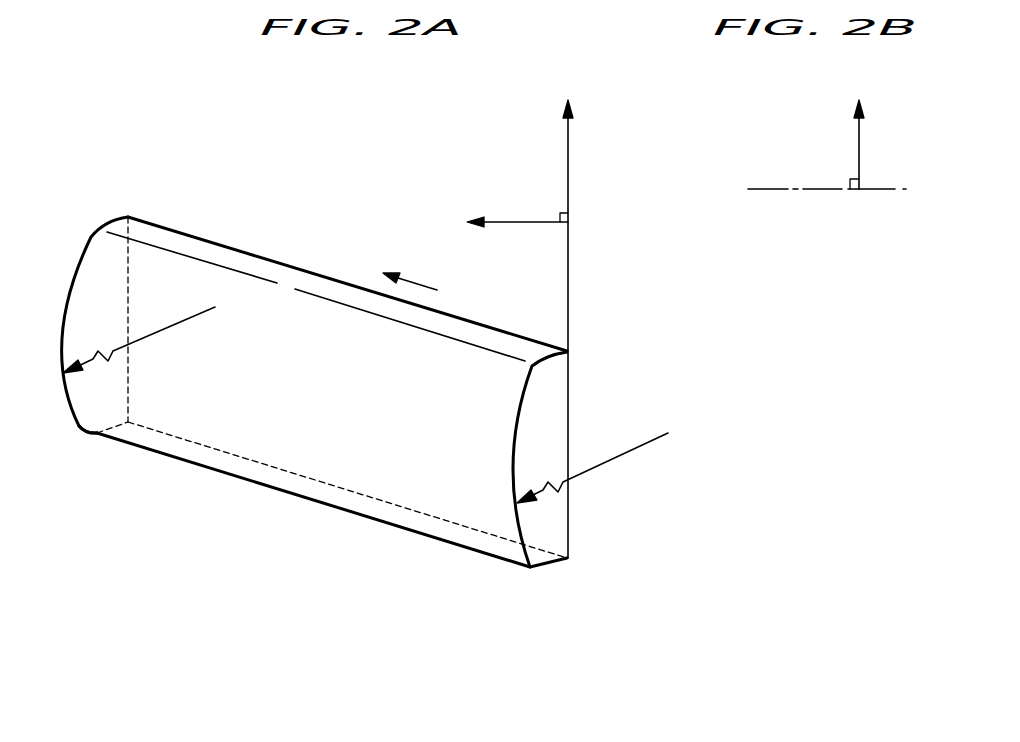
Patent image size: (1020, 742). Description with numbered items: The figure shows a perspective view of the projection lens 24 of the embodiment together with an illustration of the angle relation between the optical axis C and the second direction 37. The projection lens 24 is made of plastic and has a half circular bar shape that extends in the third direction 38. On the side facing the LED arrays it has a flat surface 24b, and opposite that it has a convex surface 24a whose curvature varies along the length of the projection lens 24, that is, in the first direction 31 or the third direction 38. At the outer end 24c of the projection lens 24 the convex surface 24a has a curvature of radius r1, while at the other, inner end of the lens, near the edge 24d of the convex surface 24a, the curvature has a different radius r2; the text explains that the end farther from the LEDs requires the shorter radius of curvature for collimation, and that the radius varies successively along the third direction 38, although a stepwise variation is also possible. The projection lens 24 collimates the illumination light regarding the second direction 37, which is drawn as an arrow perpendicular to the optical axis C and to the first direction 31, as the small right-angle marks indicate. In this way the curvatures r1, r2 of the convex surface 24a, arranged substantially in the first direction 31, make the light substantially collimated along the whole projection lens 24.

In FIG. 2A, the projection lens 24 is at (545, 342).
In FIG. 2A, the convex surface 24a is at (88, 260).
In FIG. 2A, the flat surface 24b is at (555, 412).
In FIG. 2A, the outer end 24c is at (552, 560).
In FIG. 2A, the edge of first curved surface 24d is at (80, 430).
In FIG. 2A, the first direction 31 is at (517, 218).
In FIG. 2A, the second direction 37 is at (570, 168).
In FIG. 2B, the second direction 37 is at (860, 152).
In FIG. 2A, the third direction 38 is at (413, 283).
In FIG. 2A, the radius of curvature at outer end r1 is at (607, 462).
In FIG. 2A, the radius of curvature at inner end r2 is at (145, 337).
In FIG. 2B, the optical axis C is at (773, 190).